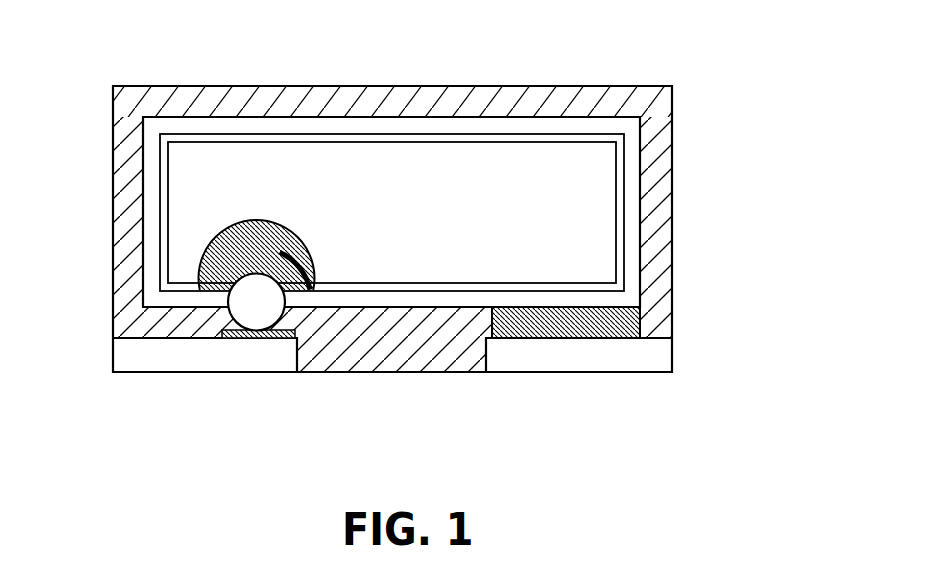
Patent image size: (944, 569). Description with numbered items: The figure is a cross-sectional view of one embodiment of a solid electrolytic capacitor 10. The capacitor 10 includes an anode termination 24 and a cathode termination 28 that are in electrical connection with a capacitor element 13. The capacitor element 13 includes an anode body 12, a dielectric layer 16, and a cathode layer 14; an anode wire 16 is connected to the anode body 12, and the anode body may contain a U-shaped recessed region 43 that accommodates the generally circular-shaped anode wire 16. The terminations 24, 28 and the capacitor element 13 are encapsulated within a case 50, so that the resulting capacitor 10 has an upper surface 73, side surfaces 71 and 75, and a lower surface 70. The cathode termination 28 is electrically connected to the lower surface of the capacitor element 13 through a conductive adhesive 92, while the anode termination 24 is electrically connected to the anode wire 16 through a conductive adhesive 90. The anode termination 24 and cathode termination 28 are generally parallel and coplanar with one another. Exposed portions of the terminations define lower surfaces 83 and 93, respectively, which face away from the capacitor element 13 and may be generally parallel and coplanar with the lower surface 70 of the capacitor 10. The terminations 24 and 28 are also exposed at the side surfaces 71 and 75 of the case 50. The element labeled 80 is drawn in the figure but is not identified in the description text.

The electrolytic capacitor 10 is at (750, 85).
The anode body 12 is at (434, 211).
The capacitor element 13 is at (190, 180).
The cathode layer 14 is at (433, 127).
The anode wire 16 is at (503, 288).
The anode termination 24 is at (125, 363).
The cathode termination 28 is at (605, 352).
The recessed region 43 is at (288, 251).
The case 50 is at (668, 250).
The lower surface 70 is at (355, 372).
The side surface 71 is at (118, 232).
The upper surface 73 is at (233, 86).
The side surface 75 is at (673, 162).
The solder ball 80 is at (242, 253).
The lower surface 83 is at (148, 372).
The conductive adhesive 90 is at (273, 338).
The conductive adhesive 92 is at (552, 330).
The lower surface 93 is at (652, 372).